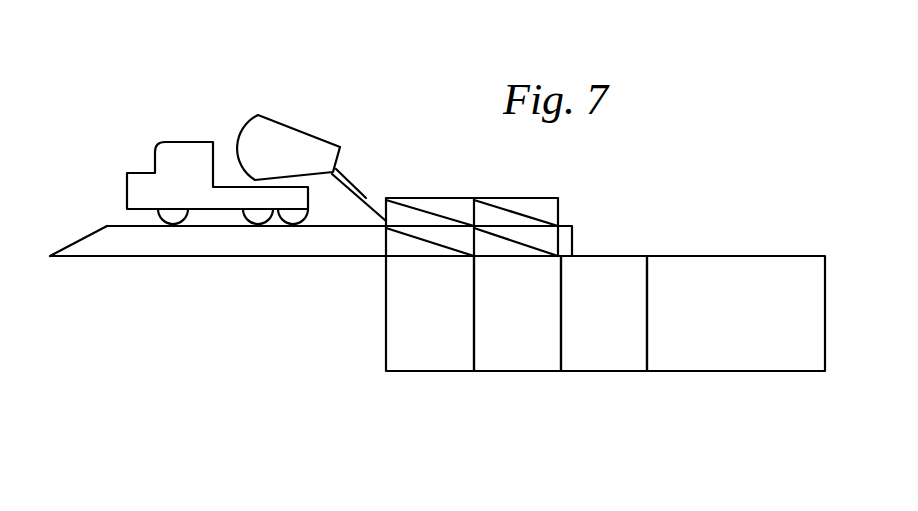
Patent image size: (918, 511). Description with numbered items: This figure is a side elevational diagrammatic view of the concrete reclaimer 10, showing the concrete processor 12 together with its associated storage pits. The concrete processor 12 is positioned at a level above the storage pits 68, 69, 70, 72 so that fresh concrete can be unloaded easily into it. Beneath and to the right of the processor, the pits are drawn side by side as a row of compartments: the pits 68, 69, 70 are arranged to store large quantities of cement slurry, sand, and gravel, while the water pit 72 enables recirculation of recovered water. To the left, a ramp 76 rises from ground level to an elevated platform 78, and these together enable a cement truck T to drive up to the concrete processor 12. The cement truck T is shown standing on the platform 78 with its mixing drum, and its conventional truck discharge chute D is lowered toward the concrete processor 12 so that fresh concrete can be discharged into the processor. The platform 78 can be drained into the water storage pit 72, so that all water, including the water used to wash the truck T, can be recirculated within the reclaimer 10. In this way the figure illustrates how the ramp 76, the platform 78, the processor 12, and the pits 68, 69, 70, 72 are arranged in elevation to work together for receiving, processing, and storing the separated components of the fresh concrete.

The concrete reclaimer 10 is at (201, 401).
The concrete processor 12 is at (443, 212).
The storage pit 68 is at (426, 361).
The storage pit 69 is at (508, 353).
The storage pit 70 is at (610, 353).
The water pit 72 is at (753, 353).
The ramp 76 is at (80, 240).
The platform 78 is at (108, 225).
The cement truck T is at (193, 152).
The truck discharge chute D is at (352, 172).